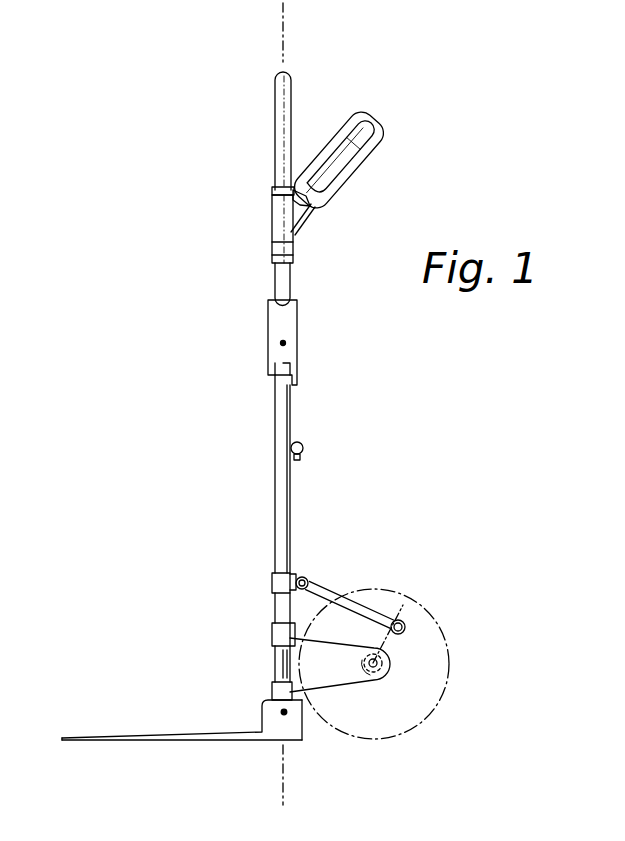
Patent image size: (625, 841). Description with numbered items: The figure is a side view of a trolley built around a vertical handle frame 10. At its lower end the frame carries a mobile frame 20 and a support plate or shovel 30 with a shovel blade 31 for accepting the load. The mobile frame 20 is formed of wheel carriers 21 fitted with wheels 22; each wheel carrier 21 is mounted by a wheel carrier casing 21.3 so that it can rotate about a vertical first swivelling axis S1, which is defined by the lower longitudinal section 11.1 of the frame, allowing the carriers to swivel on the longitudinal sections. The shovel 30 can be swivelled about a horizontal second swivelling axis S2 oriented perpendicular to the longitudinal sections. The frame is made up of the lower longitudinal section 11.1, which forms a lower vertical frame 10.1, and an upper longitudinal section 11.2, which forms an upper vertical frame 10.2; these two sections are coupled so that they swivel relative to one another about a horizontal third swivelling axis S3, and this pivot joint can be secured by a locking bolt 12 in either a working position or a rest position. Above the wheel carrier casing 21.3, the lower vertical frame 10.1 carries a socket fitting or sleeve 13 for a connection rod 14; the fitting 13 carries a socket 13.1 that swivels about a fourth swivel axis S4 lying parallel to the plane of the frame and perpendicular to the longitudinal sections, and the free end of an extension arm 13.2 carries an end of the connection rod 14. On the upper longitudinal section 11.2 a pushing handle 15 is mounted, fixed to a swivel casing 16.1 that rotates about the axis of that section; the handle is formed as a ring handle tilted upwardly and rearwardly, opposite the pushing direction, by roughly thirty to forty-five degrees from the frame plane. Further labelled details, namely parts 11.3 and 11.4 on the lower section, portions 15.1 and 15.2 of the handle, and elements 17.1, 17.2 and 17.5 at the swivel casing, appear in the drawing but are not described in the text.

The vertical frame 10 is at (265, 118).
The lower vertical frame 10.1 is at (304, 426).
The upper vertical frame 10.2 is at (258, 183).
The lower longitudinal section 11.1 is at (278, 417).
The upper longitudinal section 11.2 is at (291, 284).
The locking ball 11.3 is at (304, 446).
The locking member 11.4 is at (300, 460).
The locking bolt 12 is at (268, 337).
The socket fitting 13 is at (272, 582).
The socket 13.1 is at (305, 577).
The extension arm 13.2 is at (357, 602).
The connection rod 14 is at (405, 614).
The pushing handle 15 is at (338, 115).
The handle grip 15.1 is at (360, 148).
The handle lower bar 15.2 is at (367, 176).
The swivel casing 16.1 is at (275, 218).
The handle hinge 17.1 is at (278, 190).
The clamp rings 17.2 is at (276, 258).
The connecting rod 17.5 is at (292, 250).
The mobile frame 20 is at (371, 628).
The wheel carrier 21 is at (336, 676).
The wheel carrier casing 21.3 is at (273, 638).
The wheel 22 is at (400, 689).
The shovel 30 is at (162, 722).
The shovel blade 31 is at (112, 736).
The first swivelling axis S1 is at (283, 419).
The second swivelling axis S2 is at (290, 716).
The third swivelling axis S3 is at (287, 343).
The fourth swivel axis S4 is at (290, 592).